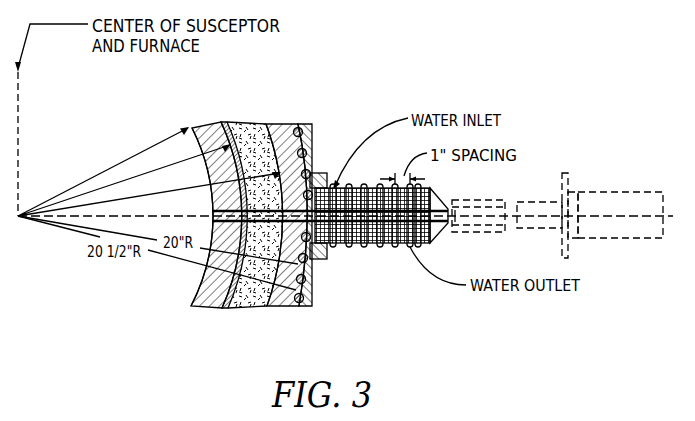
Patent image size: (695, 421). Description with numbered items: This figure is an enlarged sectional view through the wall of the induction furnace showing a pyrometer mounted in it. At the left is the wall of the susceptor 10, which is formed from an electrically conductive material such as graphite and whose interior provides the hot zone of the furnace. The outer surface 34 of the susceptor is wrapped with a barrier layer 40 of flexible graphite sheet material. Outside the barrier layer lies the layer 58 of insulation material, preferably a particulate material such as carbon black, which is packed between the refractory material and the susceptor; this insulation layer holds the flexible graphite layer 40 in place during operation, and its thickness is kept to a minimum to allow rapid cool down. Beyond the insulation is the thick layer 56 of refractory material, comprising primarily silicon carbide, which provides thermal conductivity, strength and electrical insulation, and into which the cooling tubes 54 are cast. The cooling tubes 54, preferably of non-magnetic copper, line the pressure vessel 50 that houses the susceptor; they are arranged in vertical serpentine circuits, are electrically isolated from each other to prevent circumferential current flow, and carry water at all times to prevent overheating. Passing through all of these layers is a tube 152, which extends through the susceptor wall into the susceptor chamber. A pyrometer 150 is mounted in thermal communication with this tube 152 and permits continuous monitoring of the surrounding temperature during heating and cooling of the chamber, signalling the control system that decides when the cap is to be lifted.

The susceptor 10 is at (206, 302).
The outer surface of the susceptor 34 is at (208, 124).
The barrier layer 40 is at (226, 124).
The pressure vessel 50 is at (303, 306).
The cooling tubes 54 is at (300, 124).
The refractory material layer 56 is at (282, 306).
The insulation material layer 58 is at (250, 124).
The pyrometer 150 is at (613, 240).
The tube 152 is at (212, 214).